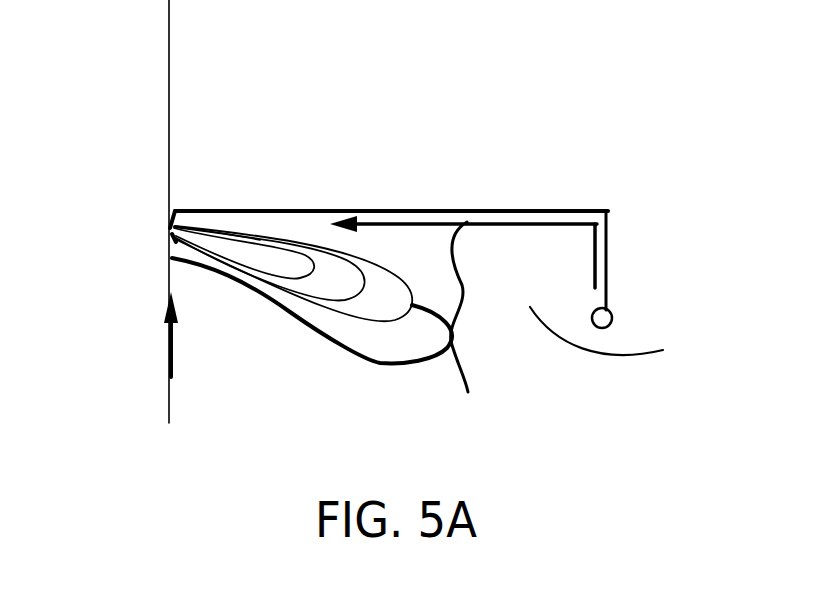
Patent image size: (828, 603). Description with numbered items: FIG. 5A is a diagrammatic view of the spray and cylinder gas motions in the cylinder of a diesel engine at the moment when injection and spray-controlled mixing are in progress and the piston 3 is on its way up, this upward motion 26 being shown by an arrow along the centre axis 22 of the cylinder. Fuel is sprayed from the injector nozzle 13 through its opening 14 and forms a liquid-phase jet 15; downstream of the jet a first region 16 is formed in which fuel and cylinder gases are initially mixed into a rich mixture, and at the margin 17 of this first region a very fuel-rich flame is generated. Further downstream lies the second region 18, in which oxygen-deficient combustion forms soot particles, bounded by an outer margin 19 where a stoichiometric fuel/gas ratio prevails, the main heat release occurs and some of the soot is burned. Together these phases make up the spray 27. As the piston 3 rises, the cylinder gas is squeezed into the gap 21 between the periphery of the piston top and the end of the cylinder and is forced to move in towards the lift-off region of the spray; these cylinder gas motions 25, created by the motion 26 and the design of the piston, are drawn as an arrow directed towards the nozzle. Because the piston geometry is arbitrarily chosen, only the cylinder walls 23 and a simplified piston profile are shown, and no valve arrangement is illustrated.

The piston 3 is at (609, 338).
The injector nozzle 13 is at (169, 222).
The opening 14 is at (169, 246).
The jet 15 is at (243, 240).
The first region 16 is at (322, 278).
The margin 17 is at (350, 300).
The second region 18 is at (385, 312).
The outer margin 19 is at (468, 321).
The gap 21 is at (553, 217).
The centre axis 22 is at (169, 42).
The walls 23 is at (608, 326).
The cylinder gas motions 25 is at (413, 222).
The piston motion 26 is at (169, 355).
The spray 27 is at (293, 237).